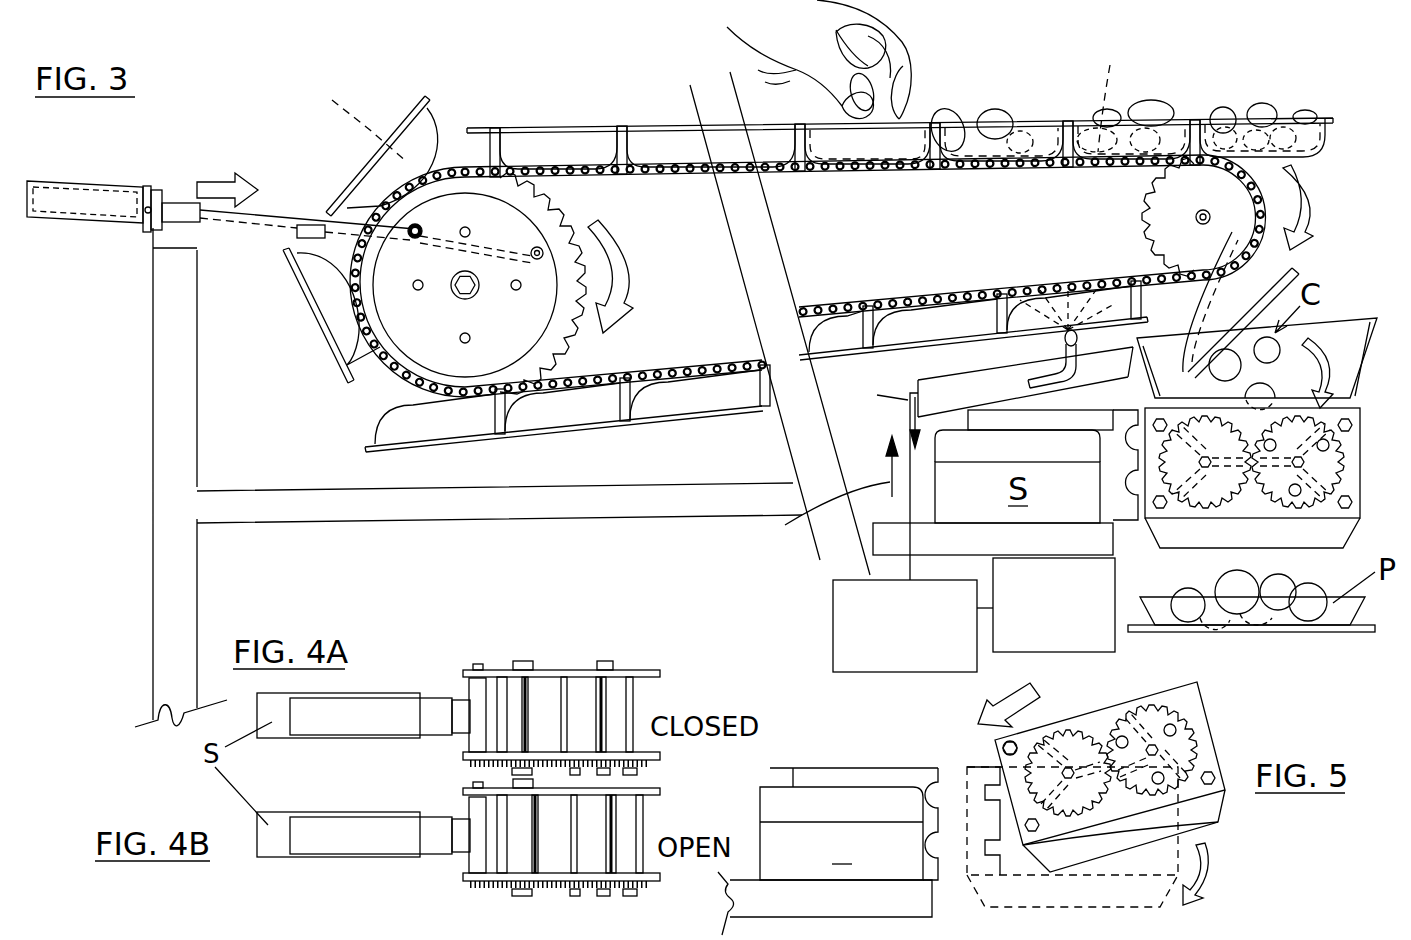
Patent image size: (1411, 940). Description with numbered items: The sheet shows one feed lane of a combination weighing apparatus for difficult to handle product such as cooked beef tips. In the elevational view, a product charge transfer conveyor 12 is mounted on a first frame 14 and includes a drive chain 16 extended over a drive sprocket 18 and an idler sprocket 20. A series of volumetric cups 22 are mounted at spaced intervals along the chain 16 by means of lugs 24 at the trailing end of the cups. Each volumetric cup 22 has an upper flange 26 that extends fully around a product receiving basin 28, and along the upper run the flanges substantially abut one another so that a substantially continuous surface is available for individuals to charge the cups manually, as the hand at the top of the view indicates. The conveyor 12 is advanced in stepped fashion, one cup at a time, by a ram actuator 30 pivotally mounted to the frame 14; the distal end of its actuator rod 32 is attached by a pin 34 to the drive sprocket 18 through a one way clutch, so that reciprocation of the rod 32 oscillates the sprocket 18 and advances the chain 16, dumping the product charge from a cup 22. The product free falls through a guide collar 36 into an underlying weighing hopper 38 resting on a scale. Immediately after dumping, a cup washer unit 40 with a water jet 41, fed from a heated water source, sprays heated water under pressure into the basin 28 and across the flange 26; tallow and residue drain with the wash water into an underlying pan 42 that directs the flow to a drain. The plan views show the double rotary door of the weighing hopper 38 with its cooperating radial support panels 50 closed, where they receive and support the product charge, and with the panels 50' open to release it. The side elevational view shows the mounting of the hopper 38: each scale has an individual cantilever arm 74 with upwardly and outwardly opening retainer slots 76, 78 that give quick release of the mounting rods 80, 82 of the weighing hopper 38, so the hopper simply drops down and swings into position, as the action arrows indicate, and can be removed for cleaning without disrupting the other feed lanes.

In FIG. 3, the product charge transfer conveyor 12 is at (1241, 86).
In FIG. 3, the first frame 14 is at (163, 417).
In FIG. 3, the drive chain 16 is at (683, 174).
In FIG. 3, the drive sprocket 18 is at (427, 337).
In FIG. 3, the idler sprocket 20 is at (1233, 231).
In FIG. 3, the volumetric cup 22 is at (683, 140).
In FIG. 3, the lug 24 is at (618, 160).
In FIG. 3, the upper flange 26 is at (426, 98).
In FIG. 3, the product receiving basin 28 is at (816, 100).
In FIG. 3, the ram actuator 30 is at (113, 205).
In FIG. 3, the actuator rod 32 is at (288, 218).
In FIG. 3, the pin 34 is at (535, 248).
In FIG. 3, the guide collar 36 is at (1363, 362).
In FIG. 3, the weighing hopper 38 is at (1362, 460).
In FIG. 4A, the weighing hopper 38 is at (573, 672).
In FIG. 4B, the weighing hopper 38 is at (552, 883).
In FIG. 5, the weighing hopper 38 is at (1213, 733).
In FIG. 3, the cup washer unit 40 is at (847, 670).
In FIG. 3, the water jet 41 is at (1060, 365).
In FIG. 3, the pan 42 is at (967, 372).
In FIG. 4A, the radial support panel 50 is at (566, 669).
In FIG. 4B, the basket half (open) 50' is at (571, 814).
In FIG. 4A, the cantilever arm 74 is at (382, 725).
In FIG. 4B, the cantilever arm 74 is at (333, 842).
In FIG. 5, the cantilever arm 74 is at (862, 783).
In FIG. 5, the retainer slot 76 is at (985, 782).
In FIG. 5, the retainer slot 78 is at (990, 863).
In FIG. 4A, the mounting rod 80 is at (475, 695).
In FIG. 4B, the mounting rod 80 is at (473, 853).
In FIG. 5, the mounting rod 80 is at (1012, 746).
In FIG. 5, the mounting rod 82 is at (1127, 817).